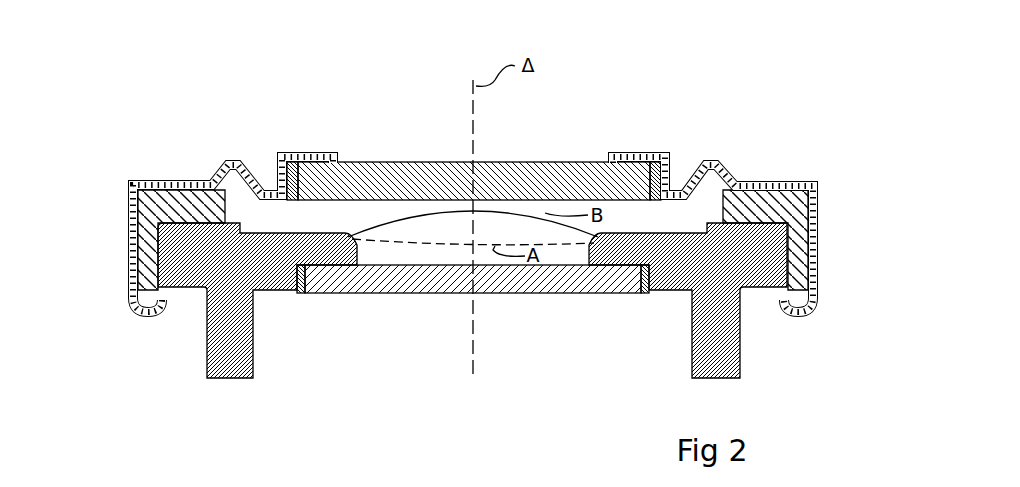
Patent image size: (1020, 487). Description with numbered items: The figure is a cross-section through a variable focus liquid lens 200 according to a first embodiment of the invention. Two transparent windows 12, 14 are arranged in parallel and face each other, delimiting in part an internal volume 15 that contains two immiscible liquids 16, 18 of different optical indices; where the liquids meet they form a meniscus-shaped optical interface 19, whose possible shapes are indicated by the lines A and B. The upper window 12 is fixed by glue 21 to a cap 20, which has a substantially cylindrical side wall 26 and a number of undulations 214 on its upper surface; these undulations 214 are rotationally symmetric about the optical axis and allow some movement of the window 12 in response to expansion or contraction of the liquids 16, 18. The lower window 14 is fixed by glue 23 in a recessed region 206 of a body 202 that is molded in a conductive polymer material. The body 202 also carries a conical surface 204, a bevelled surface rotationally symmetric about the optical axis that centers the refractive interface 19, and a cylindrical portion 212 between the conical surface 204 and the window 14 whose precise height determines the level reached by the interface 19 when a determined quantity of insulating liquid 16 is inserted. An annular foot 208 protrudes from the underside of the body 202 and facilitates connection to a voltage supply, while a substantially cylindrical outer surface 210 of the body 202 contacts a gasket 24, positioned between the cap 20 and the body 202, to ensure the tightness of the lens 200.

The variable focus liquid lens 200 is at (788, 88).
The transparent window 12 is at (556, 160).
The transparent window 14 is at (545, 293).
The internal volume 15 is at (322, 214).
The insulating liquid 16 is at (388, 258).
The conductive liquid 18 is at (372, 212).
The optical interface 19 is at (448, 214).
The cap 20 is at (210, 168).
The glue 21 is at (277, 170).
The glue 23 is at (300, 293).
The gasket 24 is at (785, 190).
The cylindrical side wall 26 is at (130, 240).
The body 202 is at (745, 385).
The conical surface 204 is at (340, 293).
The recessed region 206 is at (662, 292).
The annular foot 208 is at (688, 306).
The cylindrical outer surface 210 is at (808, 268).
The cylindrical portion 212 is at (364, 263).
The undulations 214 is at (676, 136).